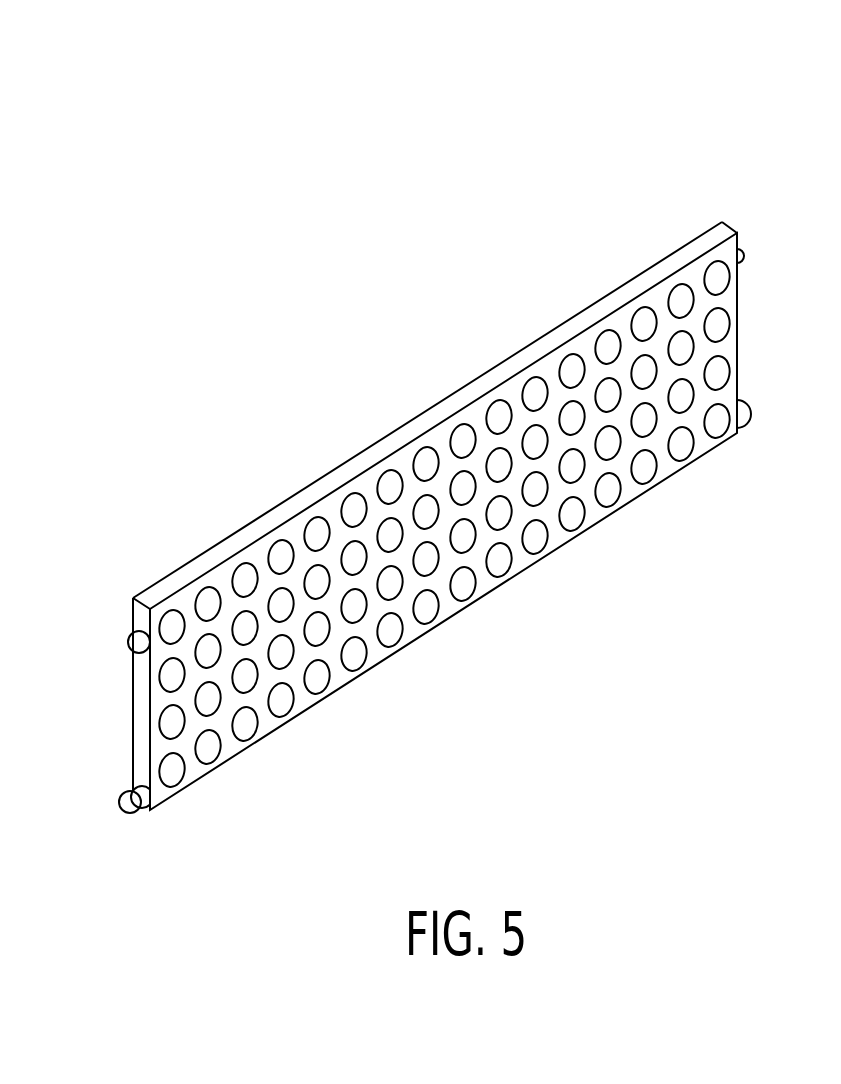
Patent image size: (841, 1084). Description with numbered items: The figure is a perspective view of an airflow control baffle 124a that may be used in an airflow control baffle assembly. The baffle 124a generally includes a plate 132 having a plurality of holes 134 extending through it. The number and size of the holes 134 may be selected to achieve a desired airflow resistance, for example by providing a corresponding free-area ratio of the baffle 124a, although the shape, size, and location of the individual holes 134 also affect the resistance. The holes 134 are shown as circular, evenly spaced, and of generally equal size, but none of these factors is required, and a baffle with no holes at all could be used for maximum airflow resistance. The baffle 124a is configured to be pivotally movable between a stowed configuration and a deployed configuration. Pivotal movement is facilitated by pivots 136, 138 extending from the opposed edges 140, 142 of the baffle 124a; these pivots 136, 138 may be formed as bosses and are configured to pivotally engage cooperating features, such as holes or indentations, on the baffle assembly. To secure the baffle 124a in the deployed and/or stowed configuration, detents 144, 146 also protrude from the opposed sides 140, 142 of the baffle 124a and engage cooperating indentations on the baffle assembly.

The baffle 124a is at (226, 166).
The plate 132 is at (722, 222).
The holes 134 is at (607, 347).
The pivot 136 is at (122, 816).
The pivot 138 is at (752, 421).
The edge 140 is at (142, 715).
The edge 142 is at (740, 356).
The detent 144 is at (128, 638).
The detent 146 is at (742, 259).